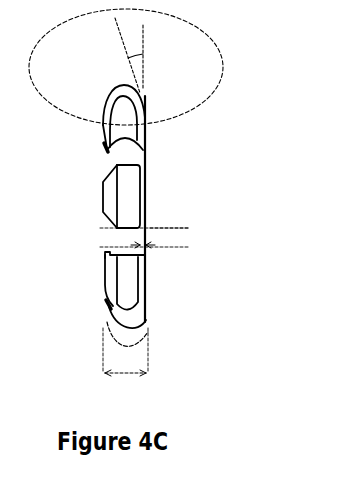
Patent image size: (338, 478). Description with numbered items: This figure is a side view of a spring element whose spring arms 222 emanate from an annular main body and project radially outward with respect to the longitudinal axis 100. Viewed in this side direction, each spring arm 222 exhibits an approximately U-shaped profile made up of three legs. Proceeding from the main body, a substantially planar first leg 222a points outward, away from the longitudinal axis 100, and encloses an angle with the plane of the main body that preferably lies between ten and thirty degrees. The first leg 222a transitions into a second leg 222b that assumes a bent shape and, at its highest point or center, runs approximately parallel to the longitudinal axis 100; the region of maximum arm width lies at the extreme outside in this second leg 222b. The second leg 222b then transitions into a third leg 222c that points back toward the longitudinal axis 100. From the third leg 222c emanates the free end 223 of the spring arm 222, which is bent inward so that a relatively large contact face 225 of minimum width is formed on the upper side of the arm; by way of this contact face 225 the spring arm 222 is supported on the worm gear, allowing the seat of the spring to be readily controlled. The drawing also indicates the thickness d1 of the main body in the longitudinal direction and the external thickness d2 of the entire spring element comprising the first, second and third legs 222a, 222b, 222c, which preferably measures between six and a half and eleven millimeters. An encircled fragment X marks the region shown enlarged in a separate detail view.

The spring arm 222 is at (125, 113).
The free end 223 is at (103, 148).
The first leg 222a is at (144, 198).
The second leg 222b is at (138, 284).
The third leg 222c is at (108, 195).
The contact face 225 is at (108, 305).
The longitudinal axis 100 is at (170, 228).
The thickness d1 is at (138, 244).
The external thickness d2 is at (133, 375).
The fragment X is at (188, 113).